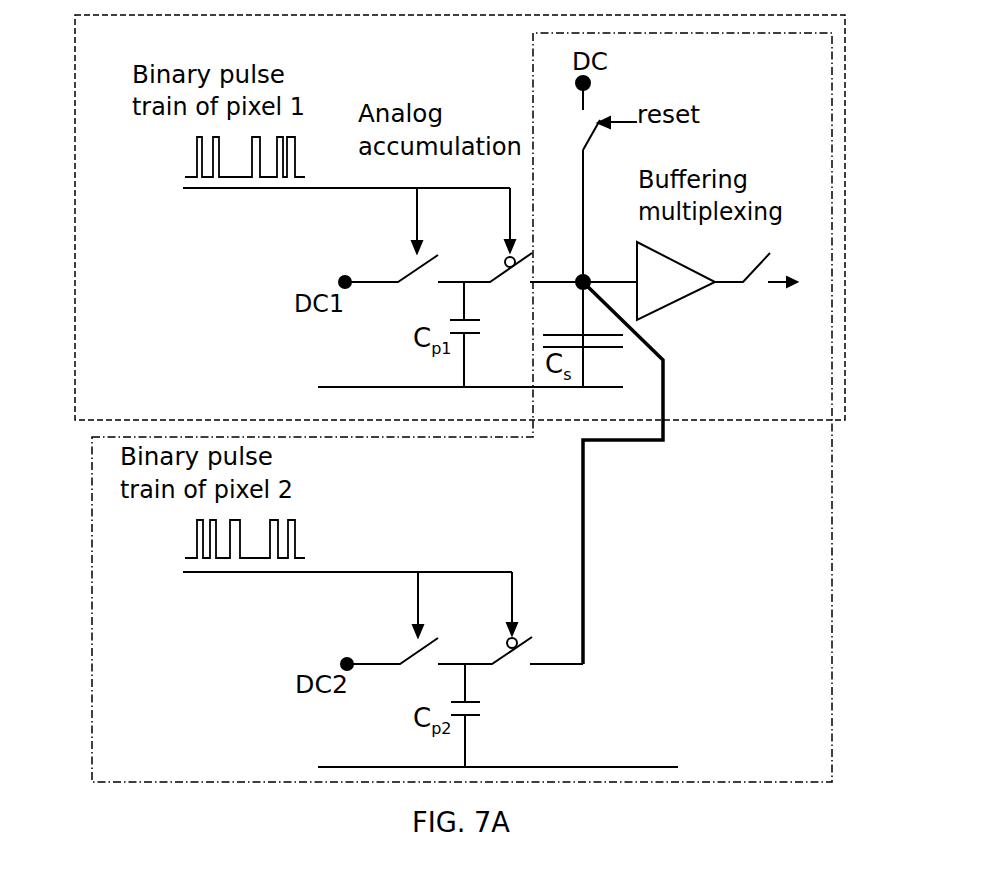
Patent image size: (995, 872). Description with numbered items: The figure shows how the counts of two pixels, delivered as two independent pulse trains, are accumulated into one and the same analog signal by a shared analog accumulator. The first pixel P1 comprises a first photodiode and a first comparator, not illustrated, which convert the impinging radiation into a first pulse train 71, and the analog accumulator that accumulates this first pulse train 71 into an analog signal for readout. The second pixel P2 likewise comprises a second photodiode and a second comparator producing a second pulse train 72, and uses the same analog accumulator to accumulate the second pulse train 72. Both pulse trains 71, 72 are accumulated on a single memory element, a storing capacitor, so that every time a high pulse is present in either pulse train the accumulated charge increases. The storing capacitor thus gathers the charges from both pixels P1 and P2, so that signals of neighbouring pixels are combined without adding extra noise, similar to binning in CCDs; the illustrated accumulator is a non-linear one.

The first pulse train 71 is at (320, 107).
The second pulse train 72 is at (313, 518).
The first pixel P1 is at (75, 283).
The second pixel P2 is at (92, 583).